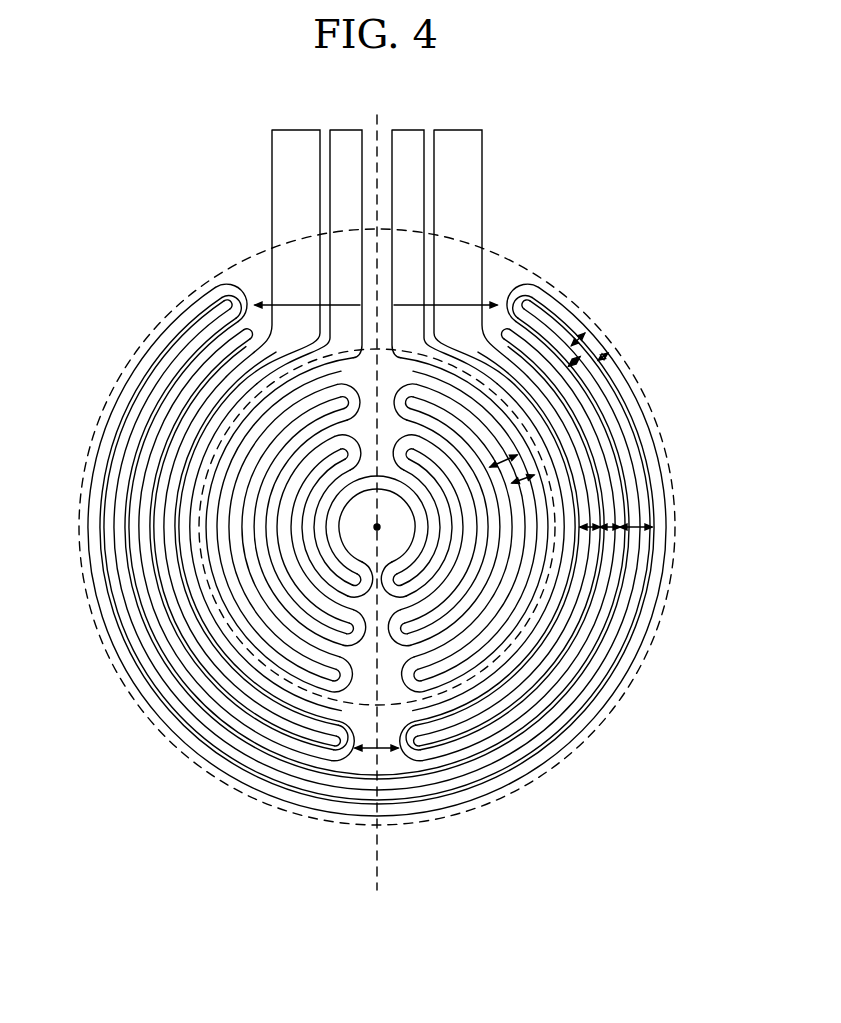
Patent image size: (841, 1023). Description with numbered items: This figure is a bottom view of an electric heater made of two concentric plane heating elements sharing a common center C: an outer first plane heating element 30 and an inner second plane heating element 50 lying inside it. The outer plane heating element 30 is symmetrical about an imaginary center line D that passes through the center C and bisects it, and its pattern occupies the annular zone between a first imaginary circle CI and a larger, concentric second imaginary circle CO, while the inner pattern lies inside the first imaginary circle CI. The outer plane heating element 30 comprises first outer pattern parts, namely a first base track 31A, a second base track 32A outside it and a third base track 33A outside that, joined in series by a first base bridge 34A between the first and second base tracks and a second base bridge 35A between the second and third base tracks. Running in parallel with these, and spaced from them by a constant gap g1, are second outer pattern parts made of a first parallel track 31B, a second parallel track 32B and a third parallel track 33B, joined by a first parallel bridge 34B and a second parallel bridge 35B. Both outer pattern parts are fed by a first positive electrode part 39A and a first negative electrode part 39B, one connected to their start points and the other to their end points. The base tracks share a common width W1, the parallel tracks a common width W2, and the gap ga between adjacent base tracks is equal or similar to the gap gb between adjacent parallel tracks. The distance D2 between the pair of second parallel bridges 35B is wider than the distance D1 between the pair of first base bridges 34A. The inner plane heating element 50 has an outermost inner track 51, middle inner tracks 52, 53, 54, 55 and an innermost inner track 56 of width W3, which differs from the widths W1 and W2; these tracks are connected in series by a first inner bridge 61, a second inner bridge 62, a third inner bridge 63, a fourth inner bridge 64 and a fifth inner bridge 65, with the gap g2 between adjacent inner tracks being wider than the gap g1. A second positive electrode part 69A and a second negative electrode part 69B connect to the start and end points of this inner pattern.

The first plane heating element 30 is at (528, 790).
The first base track 31A is at (212, 386).
The first parallel track 31B is at (182, 372).
The second base track 32A is at (158, 412).
The second parallel track 32B is at (178, 393).
The third base track 33A is at (147, 440).
The third parallel track 33B is at (105, 470).
The first base bridge 34A is at (352, 705).
The first parallel bridge 34B is at (331, 692).
The second base bridge 35A is at (221, 313).
The second parallel bridge 35B is at (250, 362).
The first positive electrode part 39A is at (458, 128).
The first negative electrode part 39B is at (299, 128).
The second plane heating element 50 is at (380, 640).
The first inner track 51 is at (226, 580).
The second inner track 52 is at (244, 538).
The third inner track 53 is at (266, 521).
The fourth inner track 54 is at (336, 580).
The fifth inner track 55 is at (346, 590).
The sixth inner track 56 is at (320, 600).
The first inner bridge 61 is at (440, 700).
The second inner bridge 62 is at (396, 392).
The third inner bridge 63 is at (418, 706).
The fourth inner bridge 64 is at (392, 458).
The fifth inner bridge 65 is at (354, 578).
The second positive electrode part 69A is at (408, 128).
The second negative electrode part 69B is at (347, 128).
The center C is at (380, 527).
The first imaginary circle CI is at (610, 688).
The second imaginary circle CO is at (510, 244).
The imaginary center line D is at (382, 176).
The distance between the pair of first base bridges D1 is at (376, 762).
The distance between the pair of second parallel bridges D2 is at (376, 296).
The width of the base tracks W1 is at (575, 362).
The width of the parallel tracks W2 is at (604, 360).
The width of the inner tracks W3 is at (518, 455).
The gap between the first and second outer pattern parts g1 is at (578, 340).
The gap between adjacent inner tracks g2 is at (534, 476).
The gap between adjacent base tracks ga is at (598, 530).
The gap between adjacent parallel tracks gb is at (626, 532).